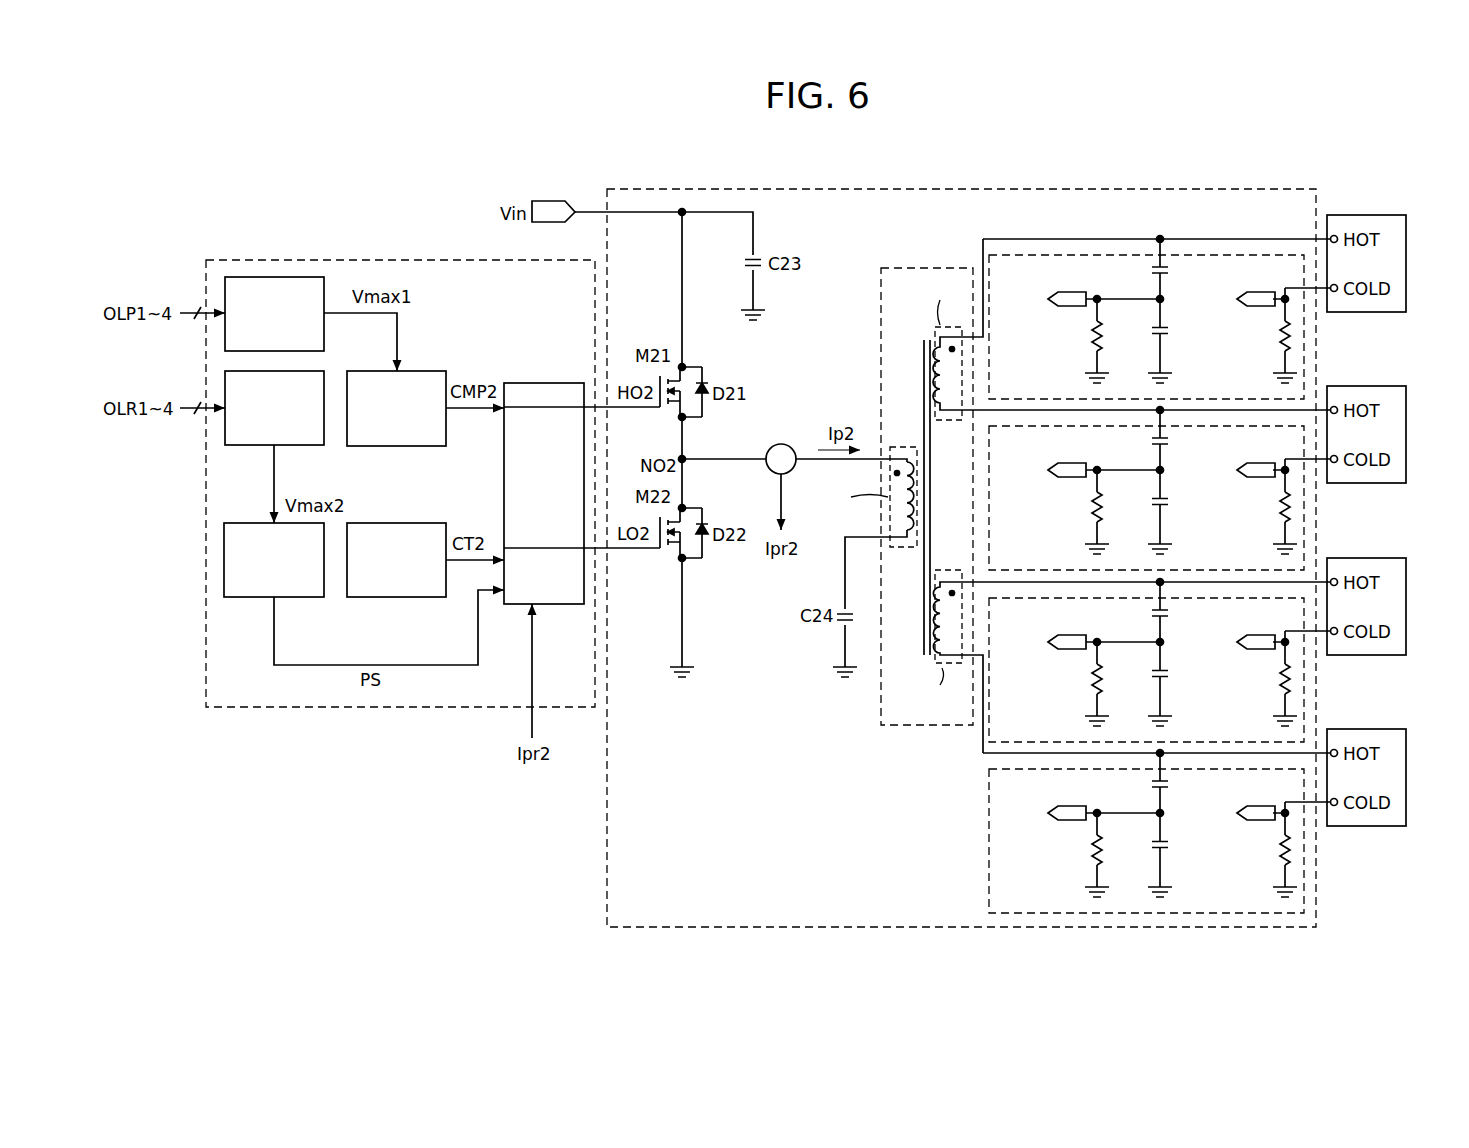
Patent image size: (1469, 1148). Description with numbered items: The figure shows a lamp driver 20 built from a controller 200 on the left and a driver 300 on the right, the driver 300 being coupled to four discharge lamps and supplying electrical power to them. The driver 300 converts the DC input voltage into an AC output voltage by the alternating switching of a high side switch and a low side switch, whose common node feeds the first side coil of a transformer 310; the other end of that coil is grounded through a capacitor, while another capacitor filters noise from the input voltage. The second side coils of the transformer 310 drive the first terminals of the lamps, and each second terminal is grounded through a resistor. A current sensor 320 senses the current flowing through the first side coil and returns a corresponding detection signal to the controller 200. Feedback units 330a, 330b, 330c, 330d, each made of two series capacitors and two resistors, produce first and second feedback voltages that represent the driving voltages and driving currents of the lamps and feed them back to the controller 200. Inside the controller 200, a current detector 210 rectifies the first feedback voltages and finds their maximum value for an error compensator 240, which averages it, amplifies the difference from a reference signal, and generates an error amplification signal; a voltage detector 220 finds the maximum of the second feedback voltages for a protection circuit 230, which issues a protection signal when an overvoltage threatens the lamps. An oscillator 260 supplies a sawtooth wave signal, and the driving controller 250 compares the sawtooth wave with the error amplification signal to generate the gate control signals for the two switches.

The lamp driver 20 is at (1252, 170).
The controller 200 is at (407, 259).
The current detector 210 is at (326, 340).
The voltage detector 220 is at (240, 447).
The protection circuit 230 is at (240, 597).
The error compensator 240 is at (397, 447).
The driving controller 250 is at (548, 382).
The oscillator 260 is at (397, 597).
The driver 300 is at (607, 872).
The transformer 310 is at (930, 266).
The current sensor 320 is at (789, 440).
The feedback unit 330a is at (1304, 342).
The feedback unit 330b is at (1304, 513).
The feedback unit 330c is at (1304, 685).
The feedback unit 330d is at (1304, 856).